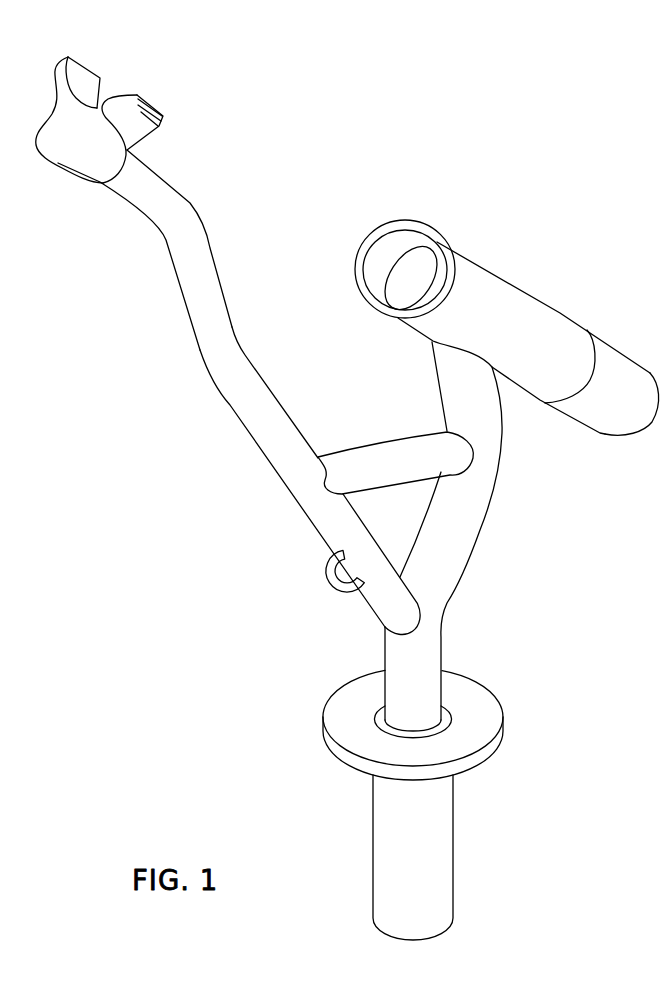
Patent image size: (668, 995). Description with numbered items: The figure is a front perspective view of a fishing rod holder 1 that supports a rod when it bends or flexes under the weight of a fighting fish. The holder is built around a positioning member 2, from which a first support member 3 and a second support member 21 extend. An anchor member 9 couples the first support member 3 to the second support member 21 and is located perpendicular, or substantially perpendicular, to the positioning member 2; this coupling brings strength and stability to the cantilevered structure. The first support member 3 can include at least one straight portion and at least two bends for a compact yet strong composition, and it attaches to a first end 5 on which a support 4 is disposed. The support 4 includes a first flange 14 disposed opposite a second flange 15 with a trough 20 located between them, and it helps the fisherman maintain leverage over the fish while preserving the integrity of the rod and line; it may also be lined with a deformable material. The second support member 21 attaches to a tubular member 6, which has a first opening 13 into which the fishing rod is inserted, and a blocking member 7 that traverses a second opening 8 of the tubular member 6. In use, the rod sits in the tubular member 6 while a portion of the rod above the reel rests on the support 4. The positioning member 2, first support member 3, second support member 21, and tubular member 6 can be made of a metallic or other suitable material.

The fishing rod holder 1 is at (571, 84).
The positioning member 2 is at (452, 838).
The first support member 3 is at (289, 489).
The support 4 is at (164, 92).
The first end 5 is at (128, 200).
The tubular member 6 is at (521, 291).
The blocking member 7 is at (639, 350).
The second opening 8 is at (544, 405).
The anchor member 9 is at (370, 446).
The first opening 13 is at (383, 227).
The first flange 14 is at (79, 63).
The second flange 15 is at (165, 121).
The trough 20 is at (97, 108).
The second support member 21 is at (481, 531).